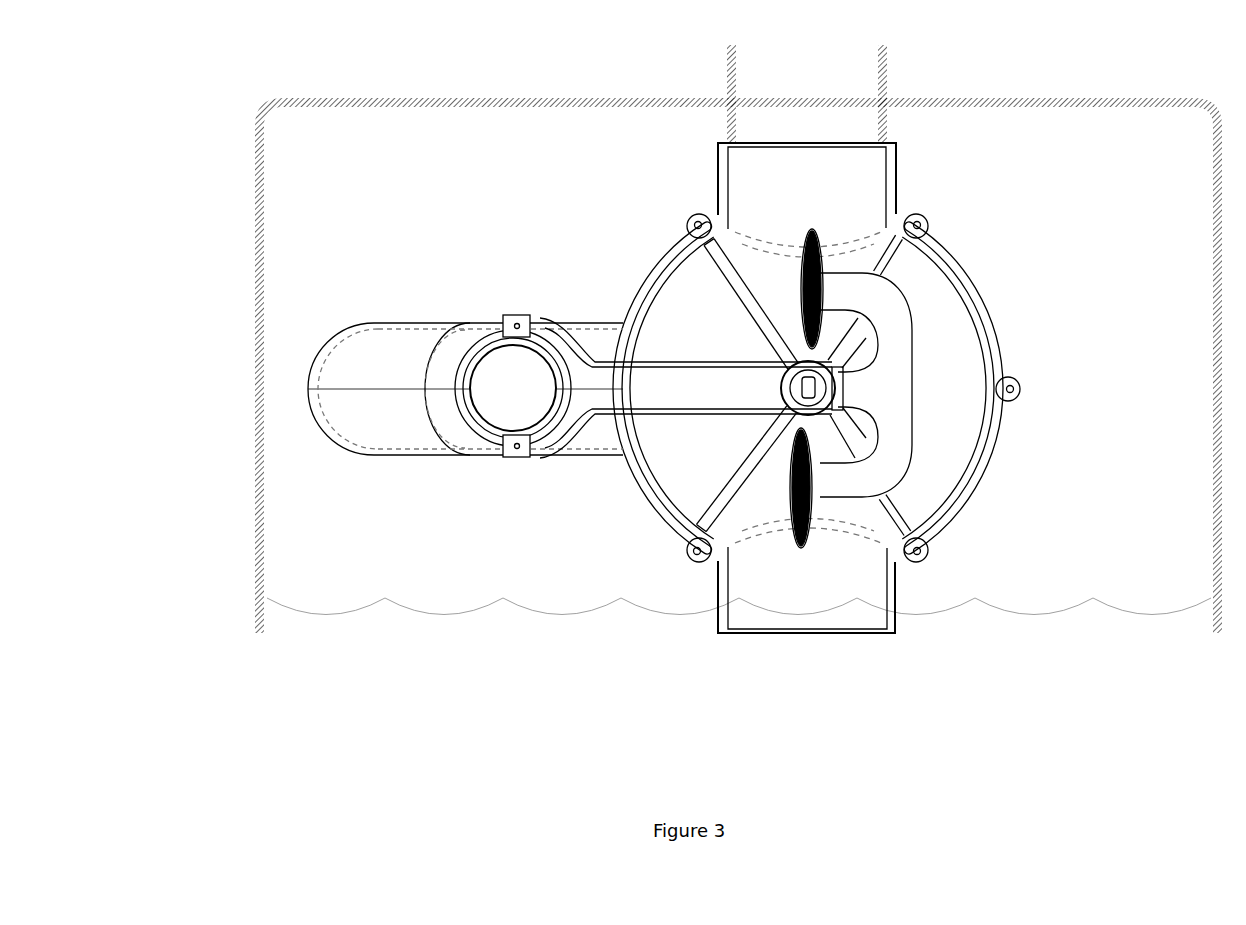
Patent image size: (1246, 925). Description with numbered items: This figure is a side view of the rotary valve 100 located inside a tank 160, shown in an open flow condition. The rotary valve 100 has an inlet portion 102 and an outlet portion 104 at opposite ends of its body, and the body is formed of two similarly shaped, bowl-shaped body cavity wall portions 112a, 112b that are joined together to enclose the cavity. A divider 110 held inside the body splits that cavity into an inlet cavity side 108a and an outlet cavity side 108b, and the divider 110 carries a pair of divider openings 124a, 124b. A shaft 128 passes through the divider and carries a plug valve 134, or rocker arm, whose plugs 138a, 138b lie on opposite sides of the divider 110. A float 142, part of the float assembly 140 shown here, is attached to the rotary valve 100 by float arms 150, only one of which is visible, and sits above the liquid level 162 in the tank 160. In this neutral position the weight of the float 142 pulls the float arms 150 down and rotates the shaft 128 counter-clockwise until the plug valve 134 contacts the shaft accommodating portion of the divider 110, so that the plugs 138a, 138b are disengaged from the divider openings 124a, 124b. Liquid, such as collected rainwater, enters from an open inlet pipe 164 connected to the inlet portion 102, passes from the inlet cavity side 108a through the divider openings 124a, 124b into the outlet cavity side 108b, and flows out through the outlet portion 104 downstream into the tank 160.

The rotary valve 100 is at (1038, 432).
The inlet portion 102 is at (730, 120).
The outlet portion 104 is at (750, 580).
The inlet cavity side 108a is at (672, 388).
The outlet cavity side 108b is at (944, 388).
The divider 110 is at (841, 448).
The body cavity wall portion 112a is at (605, 368).
The body cavity wall portion 112b is at (1008, 388).
The divider opening 124a is at (890, 280).
The divider opening 124b is at (720, 493).
The shaft 128 is at (793, 387).
The plug valve 134 is at (882, 373).
The plug 138a is at (827, 258).
The plug 138b is at (807, 497).
The float assembly 140 is at (570, 337).
The float 142 is at (355, 362).
The float arms 150 is at (610, 392).
The tank 160 is at (263, 197).
The liquid level 162 is at (323, 612).
The inlet pipe 164 is at (767, 68).